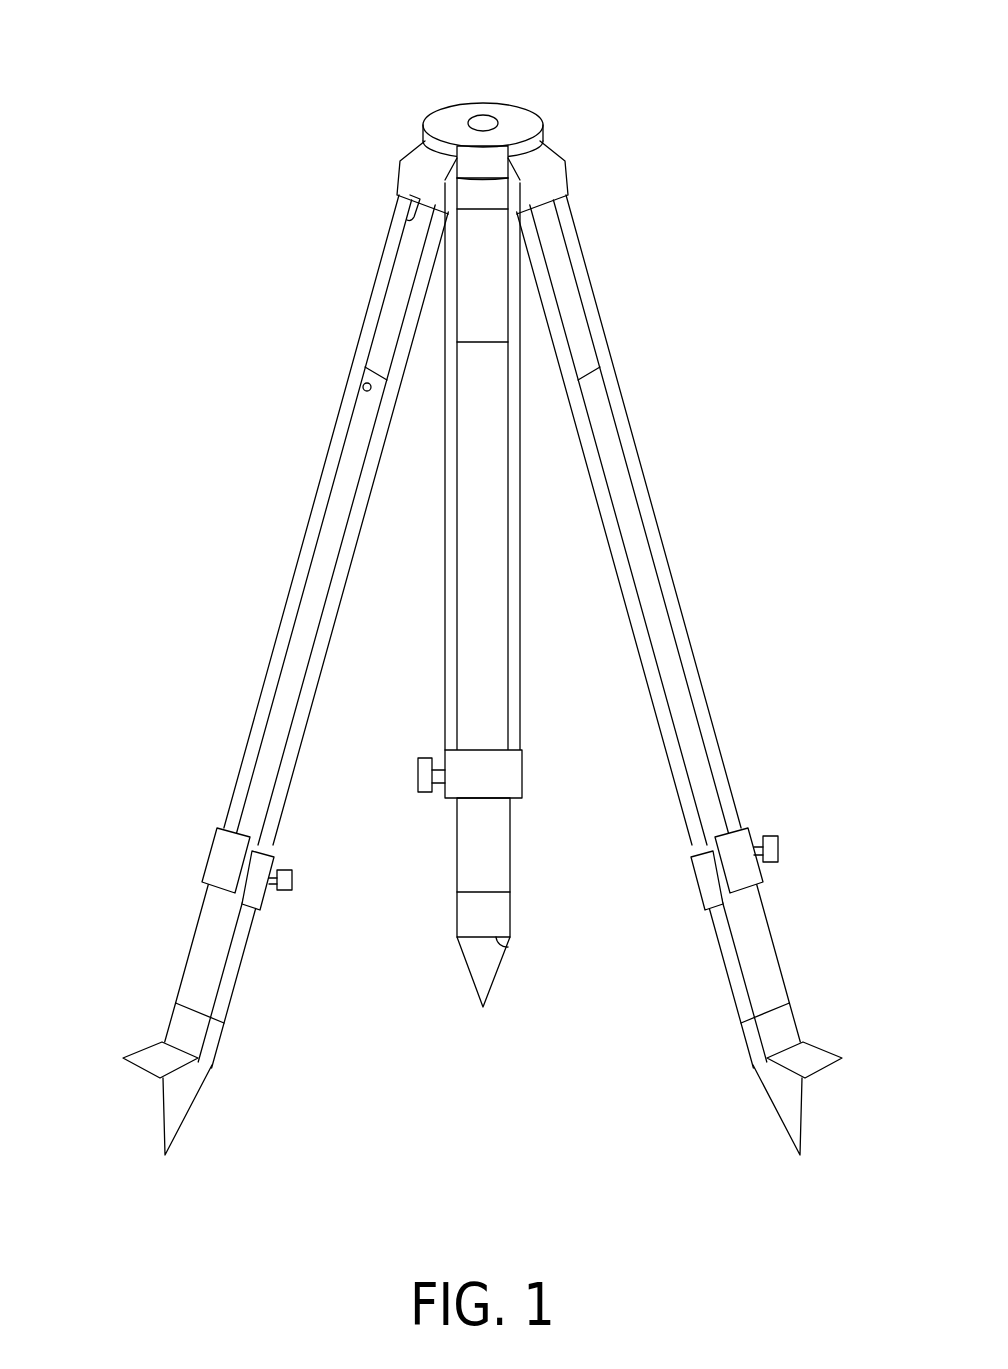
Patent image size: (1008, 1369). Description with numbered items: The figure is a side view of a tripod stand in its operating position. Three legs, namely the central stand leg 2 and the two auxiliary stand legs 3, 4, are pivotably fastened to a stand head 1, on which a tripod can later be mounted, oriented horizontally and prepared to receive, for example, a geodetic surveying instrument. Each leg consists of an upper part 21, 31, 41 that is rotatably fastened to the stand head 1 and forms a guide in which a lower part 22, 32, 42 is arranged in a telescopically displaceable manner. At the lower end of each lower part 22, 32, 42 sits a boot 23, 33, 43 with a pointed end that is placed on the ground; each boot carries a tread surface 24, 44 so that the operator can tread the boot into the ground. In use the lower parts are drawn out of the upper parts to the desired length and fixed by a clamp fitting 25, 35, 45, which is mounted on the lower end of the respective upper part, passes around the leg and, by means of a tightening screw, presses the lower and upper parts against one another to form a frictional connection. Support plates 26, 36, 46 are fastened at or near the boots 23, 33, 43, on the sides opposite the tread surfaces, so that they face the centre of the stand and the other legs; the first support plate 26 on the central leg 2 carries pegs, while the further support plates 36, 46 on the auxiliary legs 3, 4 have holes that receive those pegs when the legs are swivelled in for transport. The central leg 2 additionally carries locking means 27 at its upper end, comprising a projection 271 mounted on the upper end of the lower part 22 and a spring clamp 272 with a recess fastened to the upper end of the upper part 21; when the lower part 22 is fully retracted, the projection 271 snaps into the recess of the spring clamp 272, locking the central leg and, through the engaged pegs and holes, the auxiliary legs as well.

The stand head 1 is at (505, 78).
The stand leg 2 is at (280, 658).
The upper part 21 is at (336, 520).
The lower part 22 is at (192, 933).
The boot 23 is at (182, 1123).
The tread surface 24 is at (155, 1042).
The clamp fitting 25 is at (210, 845).
The support plate 26 is at (212, 1058).
The locking means 27 is at (363, 211).
The projection 271 is at (363, 387).
The spring clamp 272 is at (397, 203).
The stand leg 3 is at (480, 603).
The upper part 31 is at (522, 560).
The lower part 32 is at (512, 863).
The boot 33 is at (493, 987).
The clamp fitting 35 is at (522, 765).
The support plate 36 is at (502, 947).
The stand leg 4 is at (690, 654).
The upper part 41 is at (658, 512).
The lower part 42 is at (782, 963).
The boot 43 is at (787, 1133).
The tread surface 44 is at (827, 1048).
The clamp fitting 45 is at (765, 873).
The support plate 46 is at (767, 1063).